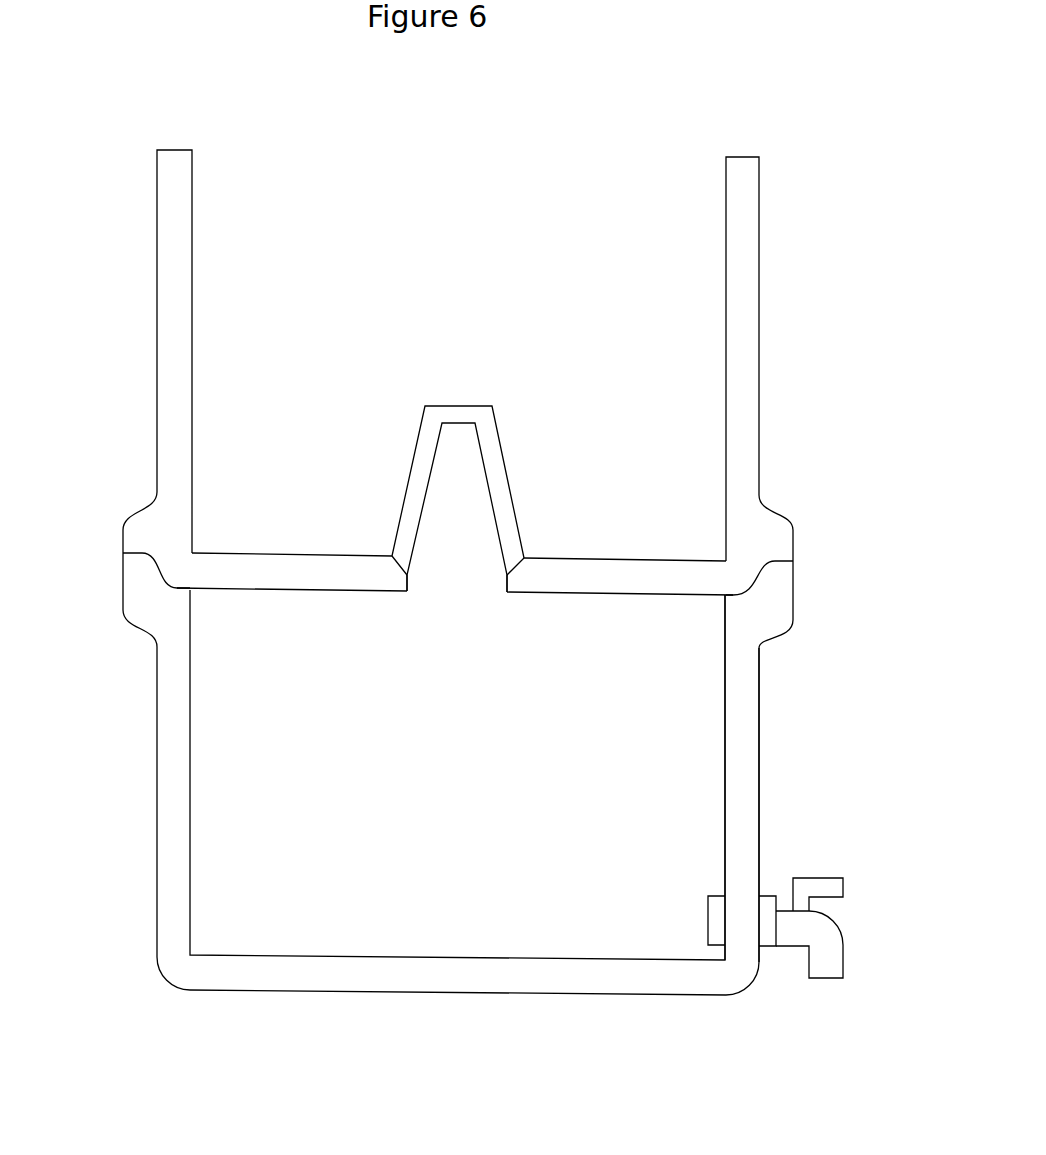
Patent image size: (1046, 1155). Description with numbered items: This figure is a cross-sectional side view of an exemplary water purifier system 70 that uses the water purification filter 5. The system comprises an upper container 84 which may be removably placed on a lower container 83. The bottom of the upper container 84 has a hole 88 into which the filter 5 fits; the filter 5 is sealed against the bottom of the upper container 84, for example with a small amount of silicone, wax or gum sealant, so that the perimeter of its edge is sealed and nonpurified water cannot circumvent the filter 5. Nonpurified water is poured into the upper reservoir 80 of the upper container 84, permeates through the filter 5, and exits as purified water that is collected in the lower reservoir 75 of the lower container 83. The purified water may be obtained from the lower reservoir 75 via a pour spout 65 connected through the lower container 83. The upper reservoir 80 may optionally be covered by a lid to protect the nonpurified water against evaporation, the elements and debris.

The water purifier system 70 is at (115, 313).
The upper reservoir 80 is at (489, 254).
The upper container 84 is at (767, 426).
The water purification filter 5 is at (514, 447).
The hole 88 is at (452, 587).
The lower reservoir 75 is at (449, 757).
The lower container 83 is at (767, 753).
The pour spout 65 is at (837, 908).